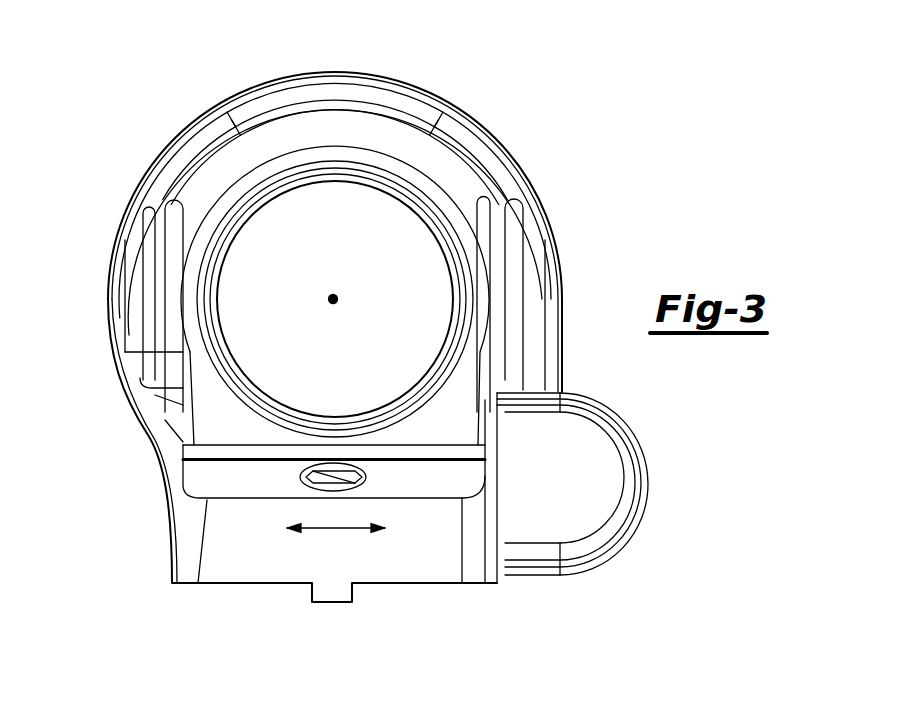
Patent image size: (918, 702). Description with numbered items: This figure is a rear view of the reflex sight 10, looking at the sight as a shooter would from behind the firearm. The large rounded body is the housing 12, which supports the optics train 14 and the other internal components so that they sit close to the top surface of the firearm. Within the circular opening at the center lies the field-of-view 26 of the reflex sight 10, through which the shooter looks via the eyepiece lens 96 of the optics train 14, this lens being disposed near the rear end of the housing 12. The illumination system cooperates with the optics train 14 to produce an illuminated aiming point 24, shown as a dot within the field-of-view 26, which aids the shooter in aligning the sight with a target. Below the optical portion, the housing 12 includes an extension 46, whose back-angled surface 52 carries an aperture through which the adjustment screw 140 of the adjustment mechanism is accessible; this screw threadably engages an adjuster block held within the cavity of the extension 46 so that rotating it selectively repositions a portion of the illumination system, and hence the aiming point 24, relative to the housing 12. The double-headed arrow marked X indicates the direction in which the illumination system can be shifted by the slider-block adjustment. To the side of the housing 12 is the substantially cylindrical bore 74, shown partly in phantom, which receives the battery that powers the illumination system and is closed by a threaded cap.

The reflex sight 10 is at (572, 65).
The housing 12 is at (447, 97).
The optics train 14 is at (425, 313).
The illuminated aiming point 24 is at (329, 299).
The field-of-view 26 is at (437, 235).
The extension 46 is at (215, 563).
The back-angled surface 52 is at (440, 486).
The cylindrical bore 74 is at (580, 487).
The eyepiece lens 96 is at (310, 208).
The adjustment screw 140 is at (327, 483).